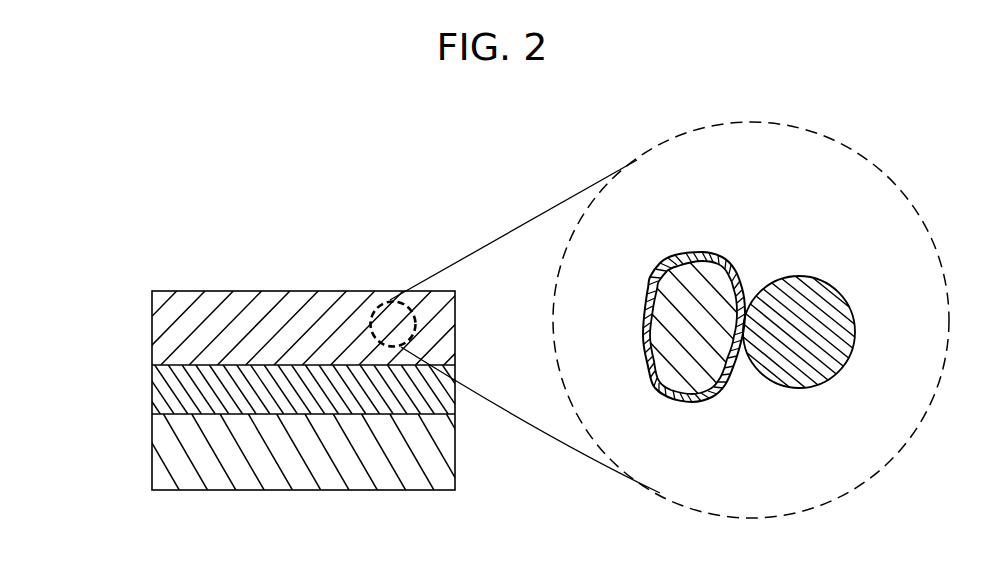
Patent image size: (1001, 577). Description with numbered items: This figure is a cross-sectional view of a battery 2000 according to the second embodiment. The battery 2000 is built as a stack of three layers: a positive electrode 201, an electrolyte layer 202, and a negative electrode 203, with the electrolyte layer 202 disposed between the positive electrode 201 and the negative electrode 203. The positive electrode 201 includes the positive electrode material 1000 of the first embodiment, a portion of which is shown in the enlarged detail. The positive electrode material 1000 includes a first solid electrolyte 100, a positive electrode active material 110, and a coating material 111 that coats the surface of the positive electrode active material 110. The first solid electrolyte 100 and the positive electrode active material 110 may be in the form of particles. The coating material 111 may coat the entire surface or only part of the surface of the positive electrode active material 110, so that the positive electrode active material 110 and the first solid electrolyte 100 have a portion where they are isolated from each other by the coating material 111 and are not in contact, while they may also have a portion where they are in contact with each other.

The battery 2000 is at (268, 233).
The positive electrode 201 is at (190, 313).
The electrolyte layer 202 is at (190, 387).
The negative electrode 203 is at (190, 452).
The positive electrode material 1000 is at (718, 221).
The first solid electrolyte 100 is at (822, 307).
The positive electrode active material 110 is at (689, 323).
The coating material 111 is at (687, 395).